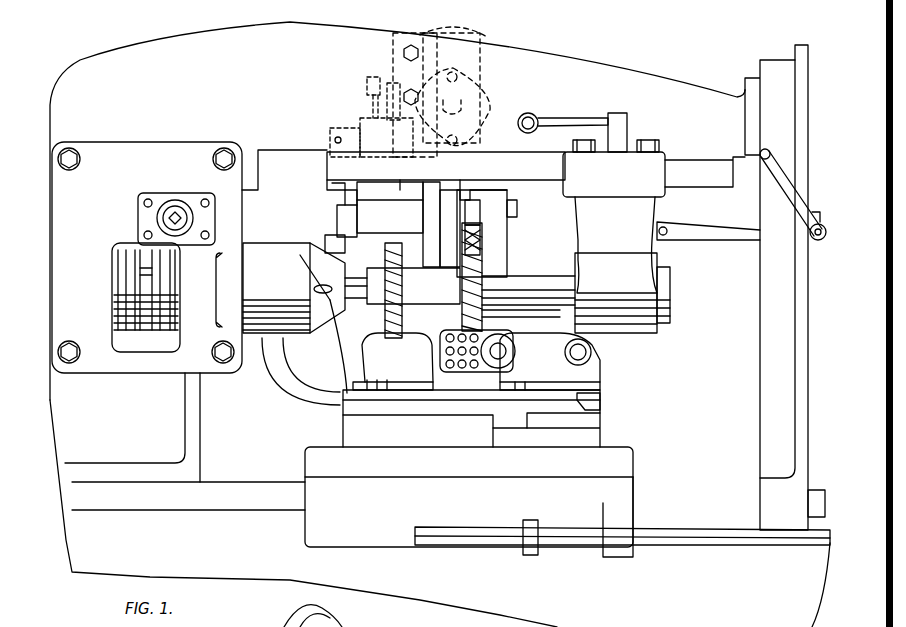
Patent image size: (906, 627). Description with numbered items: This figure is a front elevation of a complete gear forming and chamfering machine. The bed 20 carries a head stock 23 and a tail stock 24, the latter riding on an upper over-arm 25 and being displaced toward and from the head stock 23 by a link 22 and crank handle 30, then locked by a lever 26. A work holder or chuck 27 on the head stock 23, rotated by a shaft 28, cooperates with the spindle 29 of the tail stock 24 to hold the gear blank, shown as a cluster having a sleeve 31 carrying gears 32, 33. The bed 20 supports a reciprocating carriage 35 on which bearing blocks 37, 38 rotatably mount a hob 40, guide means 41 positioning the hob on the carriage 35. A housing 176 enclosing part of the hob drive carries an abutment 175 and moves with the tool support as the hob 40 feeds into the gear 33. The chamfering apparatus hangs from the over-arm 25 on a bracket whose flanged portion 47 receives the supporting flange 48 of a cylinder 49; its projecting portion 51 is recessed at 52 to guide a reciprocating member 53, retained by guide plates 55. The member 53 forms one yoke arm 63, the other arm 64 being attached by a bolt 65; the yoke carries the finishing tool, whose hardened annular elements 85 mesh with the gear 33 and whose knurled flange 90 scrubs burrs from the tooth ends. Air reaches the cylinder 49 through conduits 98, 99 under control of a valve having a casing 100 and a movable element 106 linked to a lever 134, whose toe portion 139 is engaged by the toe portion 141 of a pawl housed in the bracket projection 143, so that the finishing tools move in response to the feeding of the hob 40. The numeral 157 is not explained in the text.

The bed 20 is at (110, 498).
The link 22 is at (718, 236).
The head stock 23 is at (100, 362).
The tail stock 24 is at (672, 301).
The over-arm 25 is at (688, 95).
The lever 26 is at (590, 120).
The work holder or chuck 27 is at (268, 345).
The shaft 28 is at (145, 285).
The spindle 29 is at (578, 275).
The crank handle 30 is at (766, 149).
The sleeve 31 is at (410, 322).
The gear 32 is at (385, 305).
The gear 33 is at (500, 306).
The reciprocating carriage 35 is at (305, 520).
The bearing block 37 is at (600, 378).
The bearing block 38 is at (405, 396).
The hob 40 is at (485, 375).
The guide means 41 is at (578, 414).
The flanged portion 47 is at (524, 113).
The supporting flange 48 is at (545, 72).
The cylinder 49 is at (490, 75).
The projecting portion 51 is at (425, 203).
The recess 52 is at (432, 190).
The reciprocating member 53 is at (418, 240).
The guide plates 55 is at (465, 196).
The arm 63 is at (445, 287).
The arm 64 is at (508, 232).
The bolt 65 is at (518, 210).
The hardened annular elements 85 is at (478, 216).
The annular flange 90 is at (484, 250).
The conduit 98 is at (398, 70).
The conduit 99 is at (368, 82).
The valve casing 100 is at (362, 128).
The movable valve element 106 is at (340, 130).
The lever 134 is at (322, 154).
The toe portion 139 is at (332, 183).
The toe portion 141 is at (343, 196).
The projection 143 is at (405, 194).
The block 157 is at (338, 200).
The abutment 175 is at (356, 236).
The housing 176 is at (338, 252).